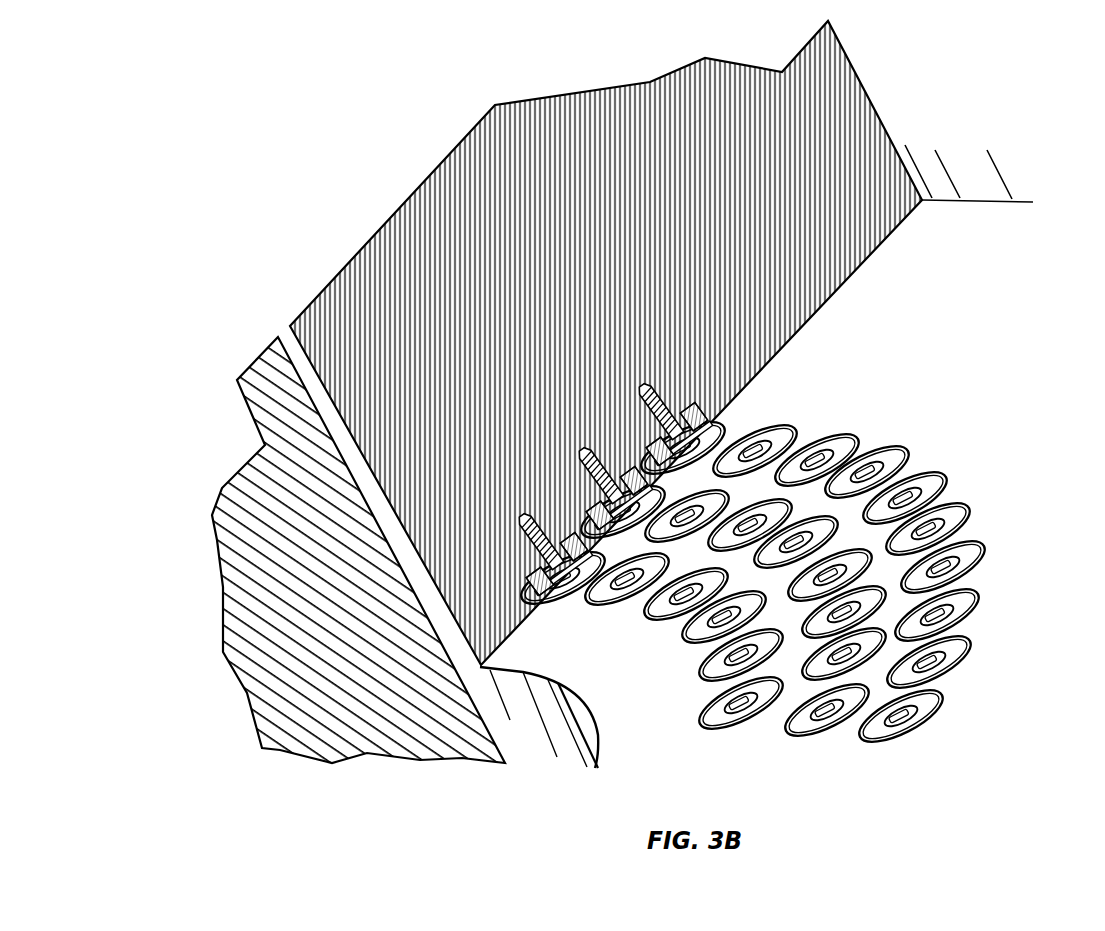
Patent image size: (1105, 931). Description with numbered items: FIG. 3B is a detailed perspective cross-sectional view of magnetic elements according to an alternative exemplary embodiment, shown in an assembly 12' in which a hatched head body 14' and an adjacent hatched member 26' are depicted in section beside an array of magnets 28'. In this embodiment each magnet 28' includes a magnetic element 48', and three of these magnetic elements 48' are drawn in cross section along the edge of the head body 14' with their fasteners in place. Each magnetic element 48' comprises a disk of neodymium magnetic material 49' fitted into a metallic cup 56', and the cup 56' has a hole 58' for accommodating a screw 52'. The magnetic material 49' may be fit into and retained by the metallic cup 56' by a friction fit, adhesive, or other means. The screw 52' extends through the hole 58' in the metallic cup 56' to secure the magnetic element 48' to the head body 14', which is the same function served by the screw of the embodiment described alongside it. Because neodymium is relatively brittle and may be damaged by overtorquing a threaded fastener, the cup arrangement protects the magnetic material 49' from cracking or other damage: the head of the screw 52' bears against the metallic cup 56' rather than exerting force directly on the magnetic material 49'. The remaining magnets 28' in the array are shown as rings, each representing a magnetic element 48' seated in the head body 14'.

The mounting assembly 12' is at (633, 456).
The panel 14' is at (590, 343).
The support member 26' is at (334, 550).
The magnet 28' is at (836, 583).
The magnetic element 48' is at (742, 440).
The magnetic material 49' is at (752, 418).
The metallic cup 56' is at (748, 408).
The hole 58' is at (765, 379).
The screw 52' is at (705, 448).